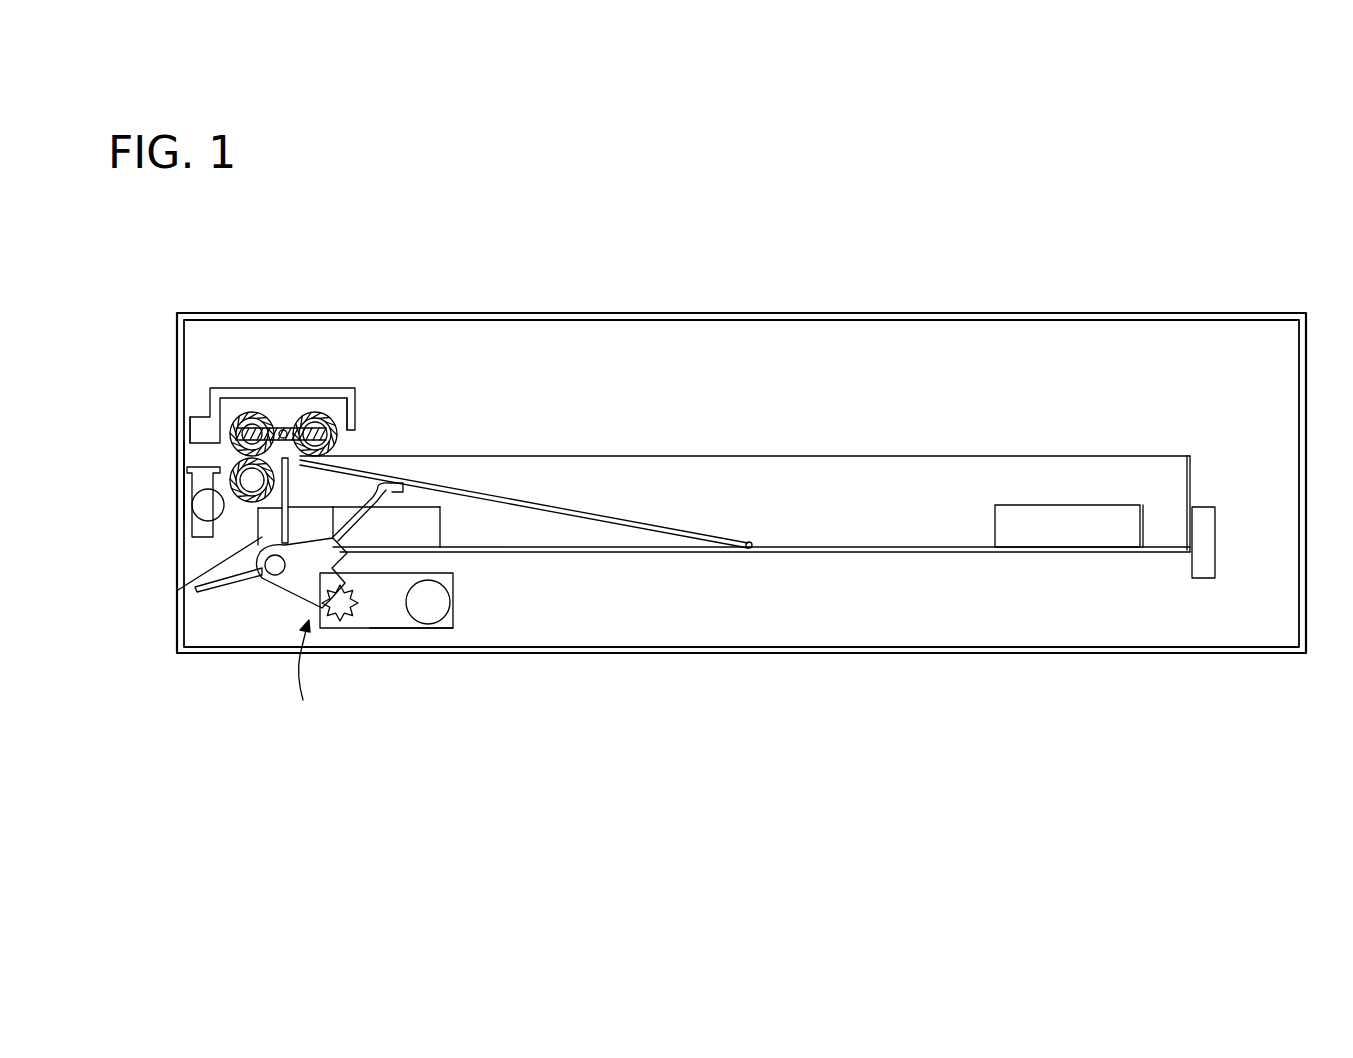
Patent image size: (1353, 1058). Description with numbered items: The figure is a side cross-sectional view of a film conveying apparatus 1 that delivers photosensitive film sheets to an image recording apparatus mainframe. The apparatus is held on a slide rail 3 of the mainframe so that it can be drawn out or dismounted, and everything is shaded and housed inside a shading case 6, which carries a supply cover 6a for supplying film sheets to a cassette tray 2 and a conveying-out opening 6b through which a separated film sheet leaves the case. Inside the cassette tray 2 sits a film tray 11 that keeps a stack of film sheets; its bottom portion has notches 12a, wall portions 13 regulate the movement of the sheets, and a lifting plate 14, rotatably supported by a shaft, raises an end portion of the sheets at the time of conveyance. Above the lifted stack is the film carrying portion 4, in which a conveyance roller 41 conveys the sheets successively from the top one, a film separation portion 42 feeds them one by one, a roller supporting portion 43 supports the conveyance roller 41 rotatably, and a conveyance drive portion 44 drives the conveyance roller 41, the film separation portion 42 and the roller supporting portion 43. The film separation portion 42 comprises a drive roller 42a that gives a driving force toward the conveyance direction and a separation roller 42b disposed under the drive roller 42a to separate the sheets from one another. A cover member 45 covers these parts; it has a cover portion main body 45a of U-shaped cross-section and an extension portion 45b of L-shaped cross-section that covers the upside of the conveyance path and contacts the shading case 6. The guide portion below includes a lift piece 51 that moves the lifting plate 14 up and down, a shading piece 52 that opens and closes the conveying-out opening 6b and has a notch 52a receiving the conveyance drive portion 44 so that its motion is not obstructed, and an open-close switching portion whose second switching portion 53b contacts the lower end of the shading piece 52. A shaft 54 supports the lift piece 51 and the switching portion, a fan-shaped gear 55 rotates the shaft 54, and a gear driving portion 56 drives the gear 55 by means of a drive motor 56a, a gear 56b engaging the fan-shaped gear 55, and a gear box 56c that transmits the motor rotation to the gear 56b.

The film conveying apparatus 1 is at (729, 258).
The cassette tray 2 is at (1190, 456).
The slide rail 3 is at (726, 437).
The film carrying portion 4 is at (278, 419).
The shading case 6 is at (990, 653).
The supply cover 6a is at (1022, 313).
The conveying-out opening 6b is at (178, 480).
The film tray 11 is at (890, 545).
The notches 12a is at (435, 543).
The wall portions 13 is at (428, 510).
The lifting plate 14 is at (690, 525).
The conveyance roller 41 is at (322, 412).
The film separation portion 42 is at (183, 419).
The drive roller 42a is at (262, 415).
The separation roller 42b is at (240, 465).
The roller supporting portion 43 is at (283, 428).
The conveyance drive portion 44 is at (202, 505).
The cover member 45 is at (212, 388).
The cover portion main body 45a is at (353, 396).
The extension portion 45b is at (190, 430).
The lift piece 51 is at (380, 490).
The shading piece 52 is at (157, 516).
The notch 52a is at (192, 487).
The second switching portion 53b is at (218, 590).
The shaft 54 is at (275, 570).
The fan-shaped gear 55 is at (302, 674).
The gear driving portion 56 is at (458, 650).
The drive motor 56a is at (450, 602).
The gear 56b is at (342, 620).
The gear box 56c is at (410, 626).